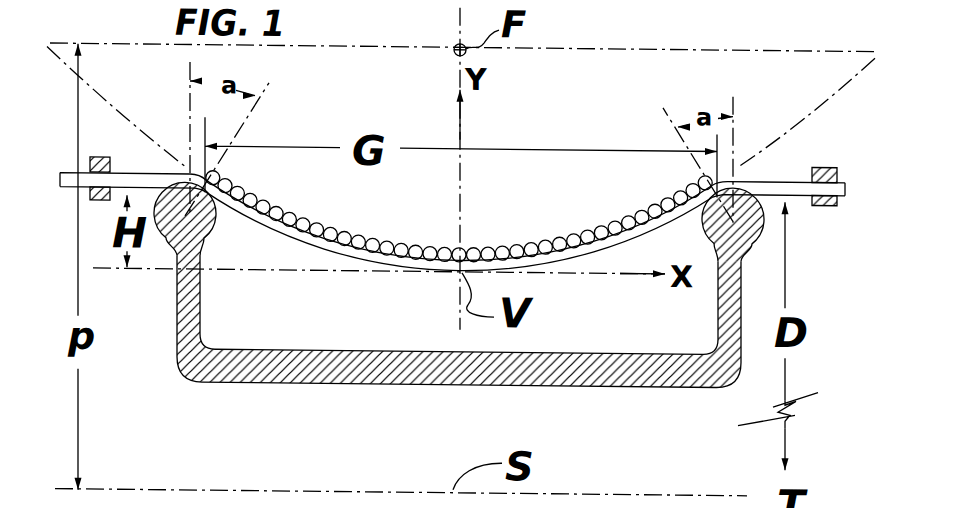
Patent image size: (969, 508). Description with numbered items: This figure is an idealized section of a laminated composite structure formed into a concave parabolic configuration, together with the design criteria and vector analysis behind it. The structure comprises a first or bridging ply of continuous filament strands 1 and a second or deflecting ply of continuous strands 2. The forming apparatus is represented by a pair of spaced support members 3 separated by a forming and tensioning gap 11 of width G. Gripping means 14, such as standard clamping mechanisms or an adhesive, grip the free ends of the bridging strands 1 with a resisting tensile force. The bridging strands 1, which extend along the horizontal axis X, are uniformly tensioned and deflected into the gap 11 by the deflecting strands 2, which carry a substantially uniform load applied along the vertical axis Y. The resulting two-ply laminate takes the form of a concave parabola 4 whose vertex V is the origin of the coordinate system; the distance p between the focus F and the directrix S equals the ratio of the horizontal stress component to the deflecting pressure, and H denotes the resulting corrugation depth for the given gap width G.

The continuous filament strands 1 is at (274, 231).
The continuous strands 2 is at (310, 217).
The support members 3 is at (213, 226).
The concave parabola 4 is at (153, 141).
The forming and tensioning gap 11 is at (580, 326).
The gripping means 14 is at (86, 171).